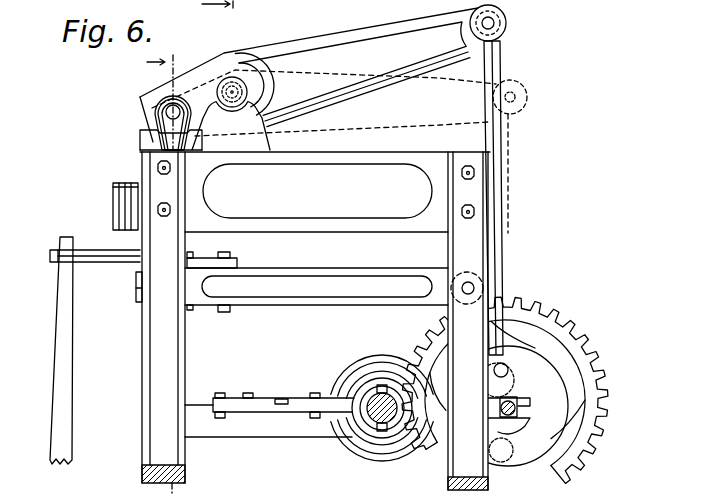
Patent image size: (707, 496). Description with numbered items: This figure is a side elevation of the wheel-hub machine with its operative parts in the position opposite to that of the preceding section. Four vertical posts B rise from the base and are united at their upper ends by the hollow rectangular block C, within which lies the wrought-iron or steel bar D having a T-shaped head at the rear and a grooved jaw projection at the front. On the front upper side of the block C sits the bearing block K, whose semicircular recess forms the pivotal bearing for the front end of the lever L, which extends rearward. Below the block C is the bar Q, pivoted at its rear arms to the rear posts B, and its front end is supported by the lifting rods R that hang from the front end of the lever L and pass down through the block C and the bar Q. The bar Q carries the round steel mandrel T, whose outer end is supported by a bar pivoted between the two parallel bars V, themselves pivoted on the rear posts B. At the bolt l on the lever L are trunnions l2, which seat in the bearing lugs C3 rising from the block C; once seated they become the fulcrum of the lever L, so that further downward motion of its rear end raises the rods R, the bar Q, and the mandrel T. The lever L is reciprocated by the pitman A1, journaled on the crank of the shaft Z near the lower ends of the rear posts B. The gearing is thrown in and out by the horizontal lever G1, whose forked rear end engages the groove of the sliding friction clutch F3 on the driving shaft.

The posts B is at (150, 362).
The block C is at (316, 198).
The bearing-lugs C3 is at (231, 126).
The bar Q is at (292, 286).
The bar D is at (112, 208).
The mandrel T is at (95, 268).
The bars V is at (65, 403).
The block K is at (140, 153).
The rods R is at (145, 137).
The lever L is at (333, 119).
The roller l is at (234, 90).
The trunnions l2 is at (222, 90).
The horizontal lever G1 is at (265, 406).
The clutch F3 is at (397, 436).
The pitman A1 is at (498, 311).
The shaft Z is at (510, 403).